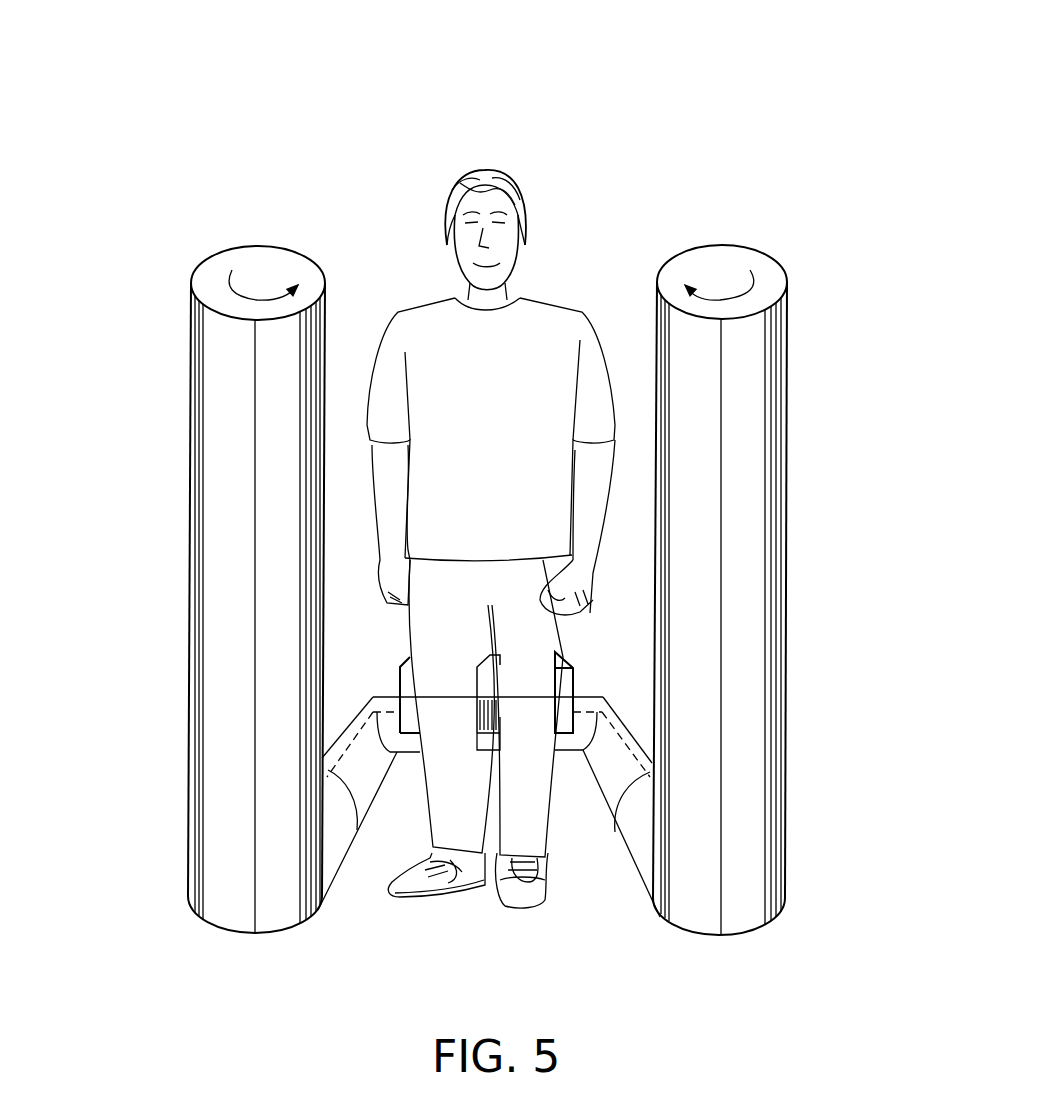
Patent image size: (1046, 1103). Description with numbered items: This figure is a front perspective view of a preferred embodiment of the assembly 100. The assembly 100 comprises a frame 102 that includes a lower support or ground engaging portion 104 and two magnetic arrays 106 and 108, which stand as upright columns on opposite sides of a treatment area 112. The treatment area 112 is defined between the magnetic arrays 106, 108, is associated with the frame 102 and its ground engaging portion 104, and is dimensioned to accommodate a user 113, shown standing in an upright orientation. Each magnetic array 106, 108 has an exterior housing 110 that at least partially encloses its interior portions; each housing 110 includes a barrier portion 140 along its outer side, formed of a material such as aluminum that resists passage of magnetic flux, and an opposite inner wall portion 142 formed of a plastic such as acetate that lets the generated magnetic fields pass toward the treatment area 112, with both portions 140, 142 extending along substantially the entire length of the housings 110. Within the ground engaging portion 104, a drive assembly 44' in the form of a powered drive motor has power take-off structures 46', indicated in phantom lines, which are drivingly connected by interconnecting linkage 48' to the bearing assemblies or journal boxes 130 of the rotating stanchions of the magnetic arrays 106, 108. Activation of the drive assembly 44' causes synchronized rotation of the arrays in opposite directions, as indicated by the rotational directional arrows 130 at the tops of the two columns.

The assembly 100 is at (735, 158).
The frame 102 is at (805, 650).
The lower support or ground engaging portion 104 is at (612, 700).
The magnetic array 106 is at (810, 290).
The magnetic array 108 is at (176, 285).
The exterior housing 110 is at (192, 408).
The treatment area 112 is at (640, 579).
The user 113 is at (565, 196).
The bearing assembly or journal box / rotational directional arrows 130 is at (250, 296).
The barrier portion 140 is at (228, 815).
The inner wall portion 142 is at (292, 380).
The drive assembly 44' is at (460, 668).
The power take-off structures 46' is at (488, 765).
The interconnecting linkage 48' is at (489, 816).